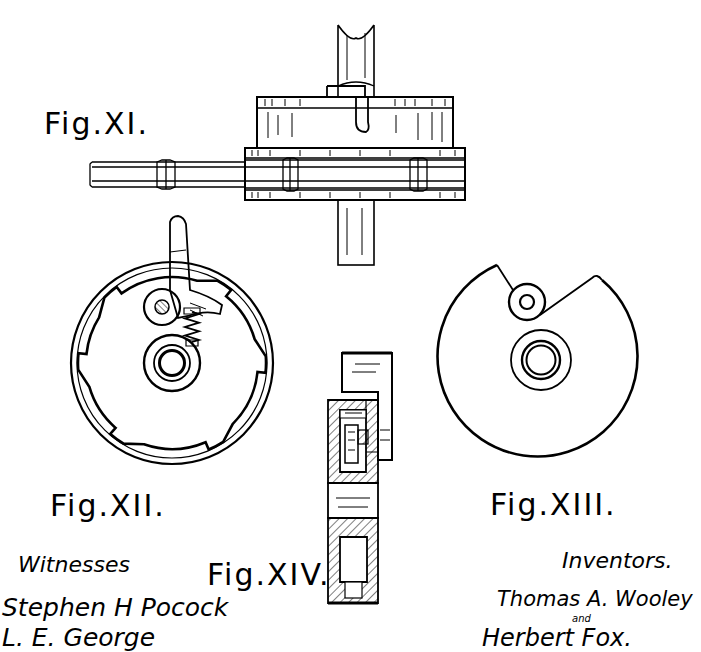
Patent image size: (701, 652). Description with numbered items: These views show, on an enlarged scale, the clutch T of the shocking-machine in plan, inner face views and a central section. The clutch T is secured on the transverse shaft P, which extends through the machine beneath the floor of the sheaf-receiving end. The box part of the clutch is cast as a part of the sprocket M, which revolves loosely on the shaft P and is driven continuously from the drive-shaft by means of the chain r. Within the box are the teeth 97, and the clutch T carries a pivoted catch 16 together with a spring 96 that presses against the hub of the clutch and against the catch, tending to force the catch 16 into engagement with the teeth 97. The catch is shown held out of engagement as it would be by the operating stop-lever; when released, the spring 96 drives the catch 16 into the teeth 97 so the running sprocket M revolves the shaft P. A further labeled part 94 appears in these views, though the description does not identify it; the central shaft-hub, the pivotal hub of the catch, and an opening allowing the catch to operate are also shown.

In FIG. 11, the pivoted catch 16 is at (357, 127).
In FIG. 12, the pivoted catch 16 is at (172, 229).
In FIG. 14, the pivoted catch 16 is at (379, 343).
In FIG. 12, the ratchet ring 94 is at (90, 365).
In FIG. 14, the ratchet ring 94 is at (344, 418).
In FIG. 12, the spring 96 is at (198, 334).
In FIG. 12, the teeth of the box 97 is at (256, 362).
In FIG. 11, the shaft P is at (375, 44).
In FIG. 11, the clutch T is at (258, 97).
In FIG. 13, the clutch T is at (444, 357).
In FIG. 14, the clutch T is at (379, 561).
In FIG. 11, the sprocket M is at (466, 187).
In FIG. 11, the chain r is at (190, 163).